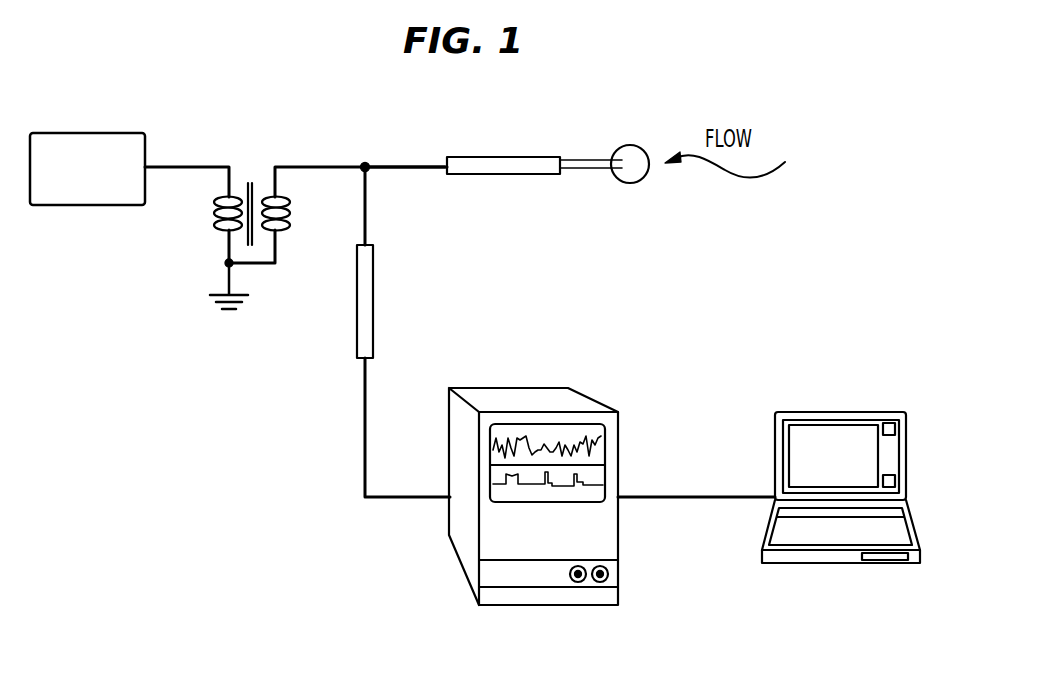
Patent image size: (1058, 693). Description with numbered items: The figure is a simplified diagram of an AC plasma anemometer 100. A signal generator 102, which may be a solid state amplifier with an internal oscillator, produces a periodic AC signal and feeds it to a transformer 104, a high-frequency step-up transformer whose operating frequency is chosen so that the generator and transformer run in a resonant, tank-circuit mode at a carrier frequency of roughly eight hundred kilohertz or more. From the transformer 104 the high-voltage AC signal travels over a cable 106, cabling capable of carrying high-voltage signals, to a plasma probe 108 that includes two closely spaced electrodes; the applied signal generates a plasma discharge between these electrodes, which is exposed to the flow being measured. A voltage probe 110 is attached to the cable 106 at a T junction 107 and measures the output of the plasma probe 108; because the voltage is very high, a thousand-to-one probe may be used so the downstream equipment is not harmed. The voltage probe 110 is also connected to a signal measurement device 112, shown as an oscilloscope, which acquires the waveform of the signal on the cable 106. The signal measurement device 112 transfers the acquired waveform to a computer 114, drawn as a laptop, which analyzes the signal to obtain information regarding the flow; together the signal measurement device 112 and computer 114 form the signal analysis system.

The plasma measurement system 100 is at (598, 70).
The signal generator 102 is at (58, 133).
The transformer 104 is at (253, 265).
The cable 106 is at (400, 163).
The node 107 is at (365, 162).
The plasma probe 108 is at (535, 175).
The voltage probe 110 is at (375, 275).
The signal measurement device 112 is at (537, 402).
The computer 114 is at (820, 565).